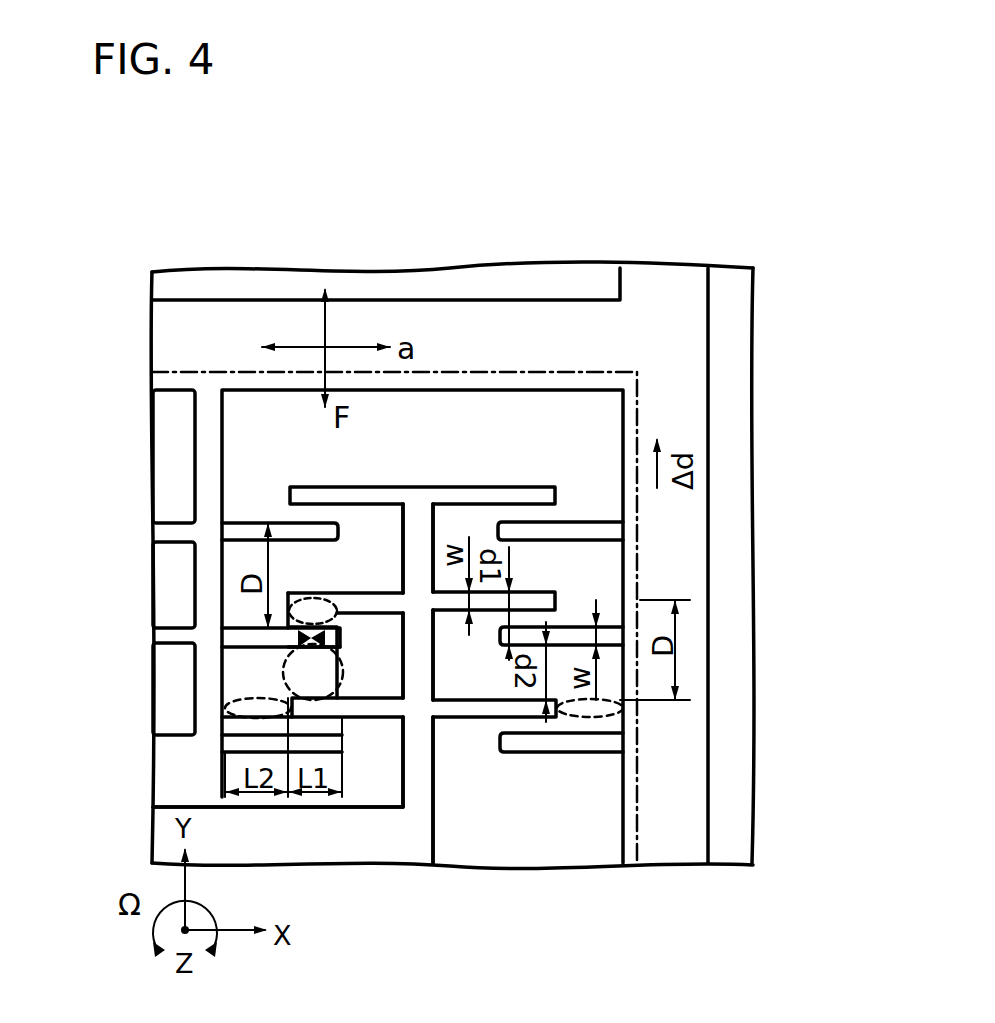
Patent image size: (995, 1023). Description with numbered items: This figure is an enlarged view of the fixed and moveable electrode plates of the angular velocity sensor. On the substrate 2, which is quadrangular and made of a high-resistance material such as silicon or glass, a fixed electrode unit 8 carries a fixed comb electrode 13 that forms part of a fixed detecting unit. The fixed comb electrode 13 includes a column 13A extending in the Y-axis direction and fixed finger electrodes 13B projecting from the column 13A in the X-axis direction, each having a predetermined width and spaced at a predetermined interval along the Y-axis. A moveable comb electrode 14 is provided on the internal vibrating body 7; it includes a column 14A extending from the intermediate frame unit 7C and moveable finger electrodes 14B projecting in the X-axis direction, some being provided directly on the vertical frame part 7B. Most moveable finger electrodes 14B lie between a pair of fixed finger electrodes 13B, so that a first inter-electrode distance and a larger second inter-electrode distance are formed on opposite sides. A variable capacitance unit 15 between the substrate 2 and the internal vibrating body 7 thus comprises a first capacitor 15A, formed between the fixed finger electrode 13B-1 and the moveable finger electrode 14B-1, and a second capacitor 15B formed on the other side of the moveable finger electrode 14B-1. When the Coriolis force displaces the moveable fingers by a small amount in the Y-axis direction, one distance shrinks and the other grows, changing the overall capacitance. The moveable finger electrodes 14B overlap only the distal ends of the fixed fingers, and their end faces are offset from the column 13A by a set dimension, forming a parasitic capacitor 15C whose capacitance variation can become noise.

The substrate 2 is at (735, 300).
The internal vibrating body 7 is at (466, 308).
The vertical frame part 7B is at (668, 283).
The intermediate frame unit 7C is at (207, 313).
The fixed electrode unit 8 is at (325, 843).
The fixed comb electrode 13 is at (420, 787).
The column 13A is at (425, 738).
The fixed finger electrode 13B is at (292, 488).
The fixed finger electrode 13B-1 is at (287, 597).
The moveable comb electrode 14 is at (197, 413).
The column 14A is at (200, 566).
The moveable finger electrode 14B is at (252, 530).
The moveable finger electrode 14B-1 is at (292, 632).
The variable capacitance unit 15 is at (578, 356).
The first capacitor 15A is at (290, 641).
The second capacitor 15B is at (287, 681).
The parasitic capacitor 15C is at (240, 716).